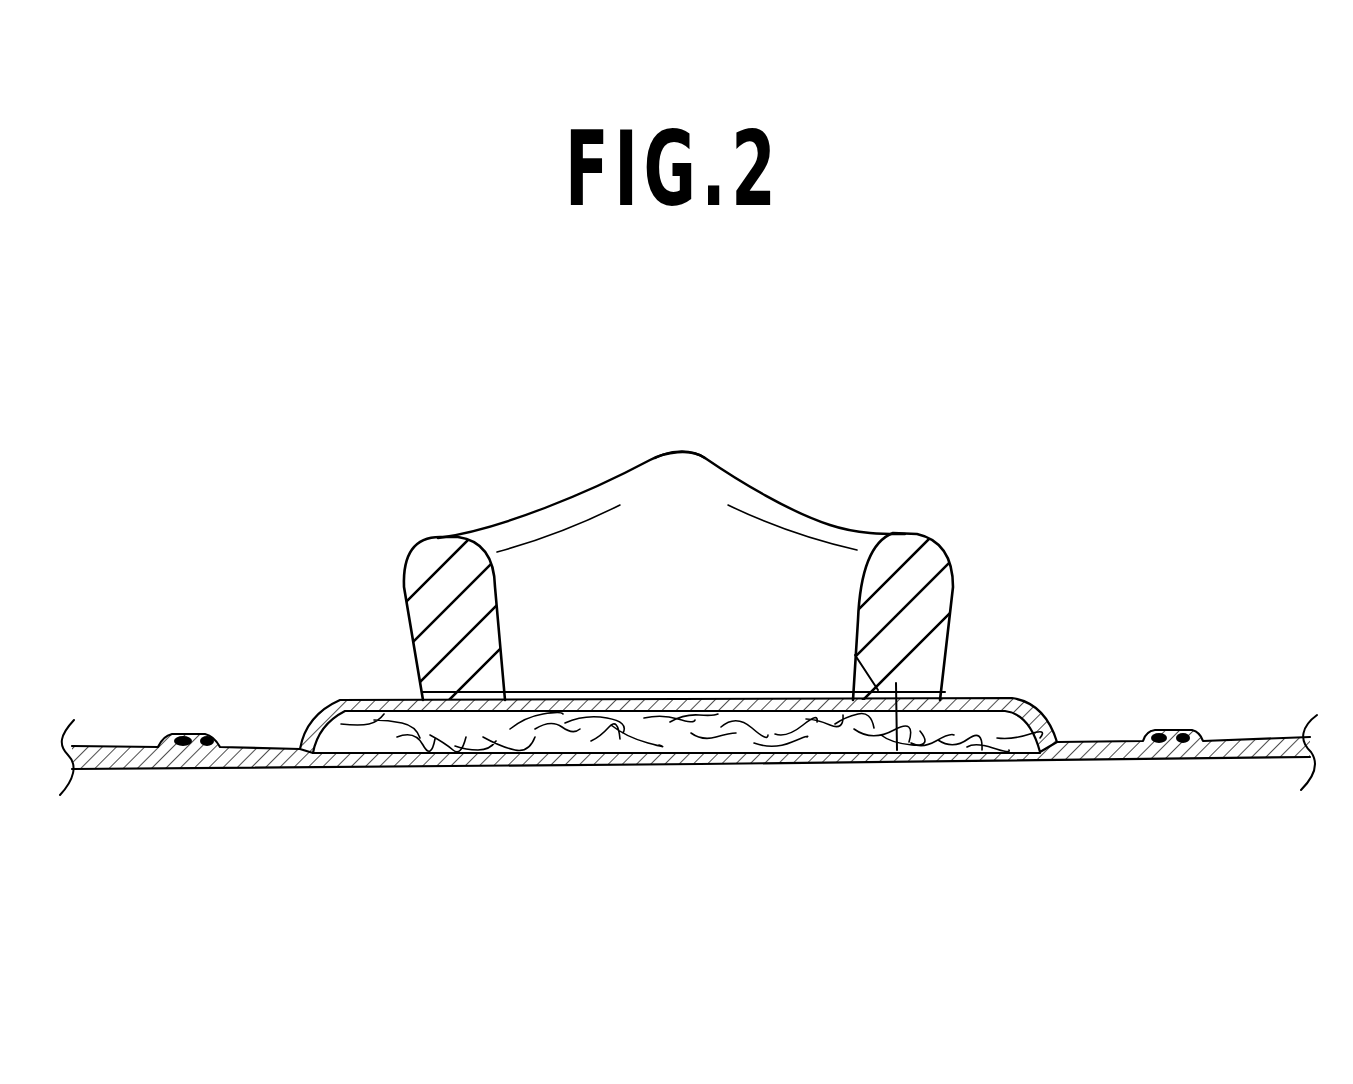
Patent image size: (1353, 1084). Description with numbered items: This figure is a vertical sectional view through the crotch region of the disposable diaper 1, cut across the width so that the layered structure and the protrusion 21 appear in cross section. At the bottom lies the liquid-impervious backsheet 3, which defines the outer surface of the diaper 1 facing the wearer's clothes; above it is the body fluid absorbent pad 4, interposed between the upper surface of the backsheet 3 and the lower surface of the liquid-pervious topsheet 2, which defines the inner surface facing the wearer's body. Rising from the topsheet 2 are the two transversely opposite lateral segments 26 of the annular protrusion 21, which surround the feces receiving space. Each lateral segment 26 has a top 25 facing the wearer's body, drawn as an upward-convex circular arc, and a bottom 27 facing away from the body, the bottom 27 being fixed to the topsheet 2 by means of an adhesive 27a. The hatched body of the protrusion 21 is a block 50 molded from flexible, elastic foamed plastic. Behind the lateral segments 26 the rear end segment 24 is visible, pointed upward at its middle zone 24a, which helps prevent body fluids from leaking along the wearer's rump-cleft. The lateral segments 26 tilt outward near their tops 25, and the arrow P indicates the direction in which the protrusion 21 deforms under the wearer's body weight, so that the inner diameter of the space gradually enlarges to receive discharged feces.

The disposable diaper 1 is at (824, 425).
The topsheet 2 is at (1103, 738).
The backsheet 3 is at (807, 765).
The body fluid absorbent pad 4 is at (673, 730).
The protrusion 21 is at (418, 508).
The rear end segment 24 is at (627, 480).
The middle zone of rear end segment 24a is at (679, 450).
The top 25 is at (913, 535).
The lateral segments 26 is at (407, 588).
The bottom 27 is at (897, 750).
The adhesive 27a is at (855, 655).
The block 50 is at (935, 568).
The arrow P is at (385, 613).